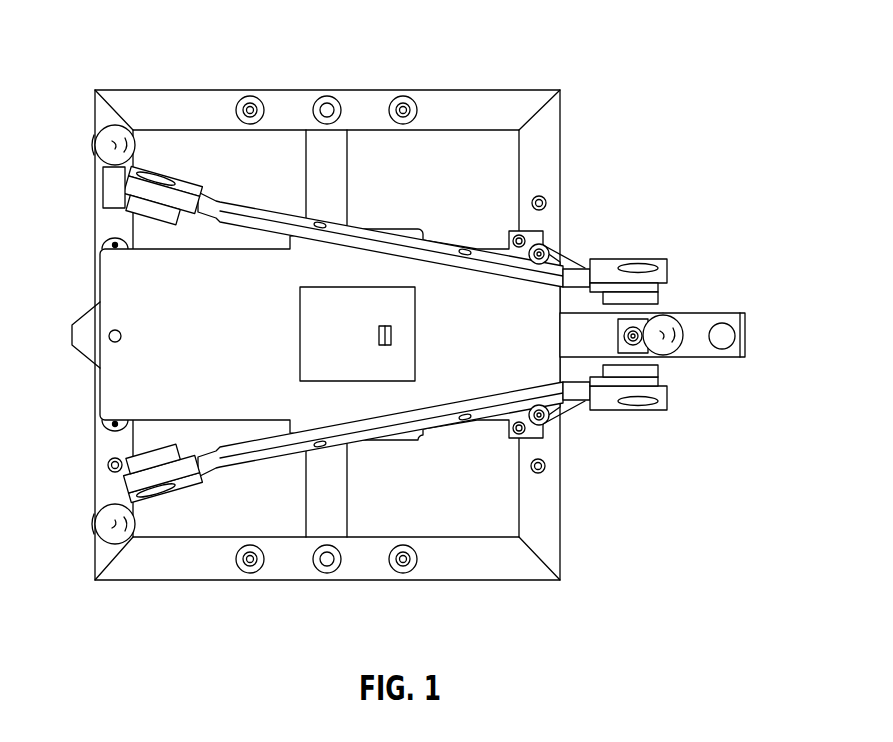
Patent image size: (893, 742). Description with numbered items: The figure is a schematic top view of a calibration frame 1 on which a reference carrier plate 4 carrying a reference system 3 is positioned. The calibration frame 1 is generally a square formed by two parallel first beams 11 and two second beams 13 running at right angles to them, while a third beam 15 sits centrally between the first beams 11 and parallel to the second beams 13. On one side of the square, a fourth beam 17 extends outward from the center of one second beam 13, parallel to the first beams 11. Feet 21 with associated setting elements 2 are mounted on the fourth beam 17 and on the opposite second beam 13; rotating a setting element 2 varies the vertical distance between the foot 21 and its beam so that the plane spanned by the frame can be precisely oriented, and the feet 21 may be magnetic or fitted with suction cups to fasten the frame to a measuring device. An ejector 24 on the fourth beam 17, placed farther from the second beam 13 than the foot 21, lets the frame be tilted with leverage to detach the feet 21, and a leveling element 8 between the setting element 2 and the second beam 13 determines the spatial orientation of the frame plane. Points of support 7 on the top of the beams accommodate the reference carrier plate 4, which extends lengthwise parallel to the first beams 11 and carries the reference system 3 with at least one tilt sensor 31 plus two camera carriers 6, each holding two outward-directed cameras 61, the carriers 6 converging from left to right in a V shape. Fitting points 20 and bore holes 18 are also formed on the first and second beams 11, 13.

The calibration frame 1 is at (722, 65).
The setting element 2 is at (106, 142).
The reference system 3 is at (320, 333).
The reference carrier plate 4 is at (135, 385).
The camera carrier 6 is at (440, 247).
The point of support 7 is at (250, 96).
The leveling element 8 is at (638, 342).
The first beam 11 is at (203, 108).
The second beam 13 is at (546, 150).
The third beam 15 is at (333, 180).
The fourth beam 17 is at (690, 345).
The bore hole 18 is at (546, 200).
The fitting point 20 is at (327, 96).
The foot 21 is at (95, 148).
The ejector 24 is at (736, 336).
The tilt sensor 31 is at (393, 334).
The camera 61 is at (153, 172).